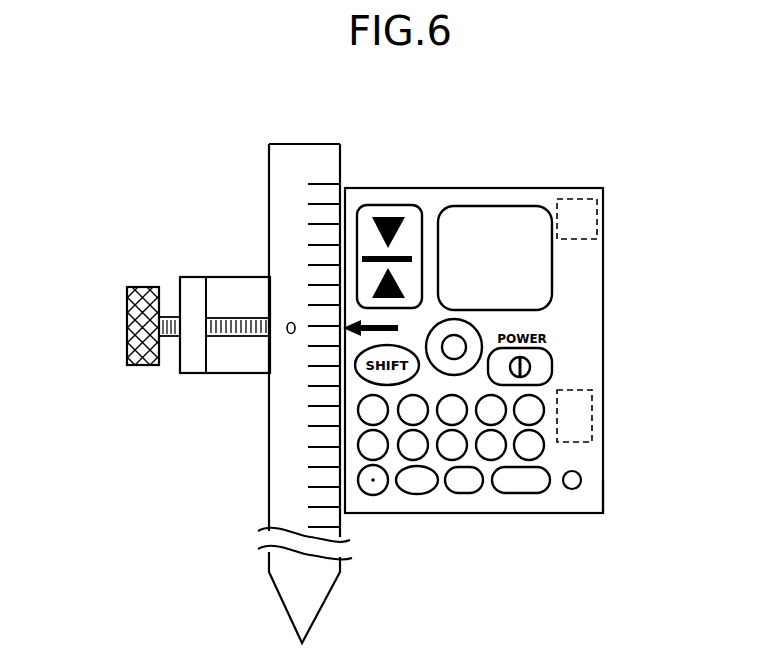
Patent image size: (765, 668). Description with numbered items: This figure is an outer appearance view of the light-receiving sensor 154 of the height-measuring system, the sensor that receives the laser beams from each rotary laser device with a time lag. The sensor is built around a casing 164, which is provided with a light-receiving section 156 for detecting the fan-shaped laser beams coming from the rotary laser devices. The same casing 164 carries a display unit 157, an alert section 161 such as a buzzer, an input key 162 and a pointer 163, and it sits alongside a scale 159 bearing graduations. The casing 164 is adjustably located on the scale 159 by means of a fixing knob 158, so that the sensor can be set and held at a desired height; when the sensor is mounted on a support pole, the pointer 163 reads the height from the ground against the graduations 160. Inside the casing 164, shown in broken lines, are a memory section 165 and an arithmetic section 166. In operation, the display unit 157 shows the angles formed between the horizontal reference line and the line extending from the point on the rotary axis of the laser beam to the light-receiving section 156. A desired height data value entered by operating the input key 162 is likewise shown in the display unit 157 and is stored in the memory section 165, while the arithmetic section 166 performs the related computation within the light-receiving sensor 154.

The light-receiving sensor 154 is at (610, 364).
The light-receiving section 156 is at (580, 472).
The display unit 157 is at (400, 207).
The fixing knob 158 is at (128, 287).
The scale 159 is at (298, 170).
The graduations 160 is at (318, 348).
The alert section 161 is at (473, 323).
The input key 162 is at (448, 503).
The pointer 163 is at (345, 326).
The casing 164 is at (604, 497).
The memory section 165 is at (573, 199).
The arithmetic section 166 is at (593, 418).